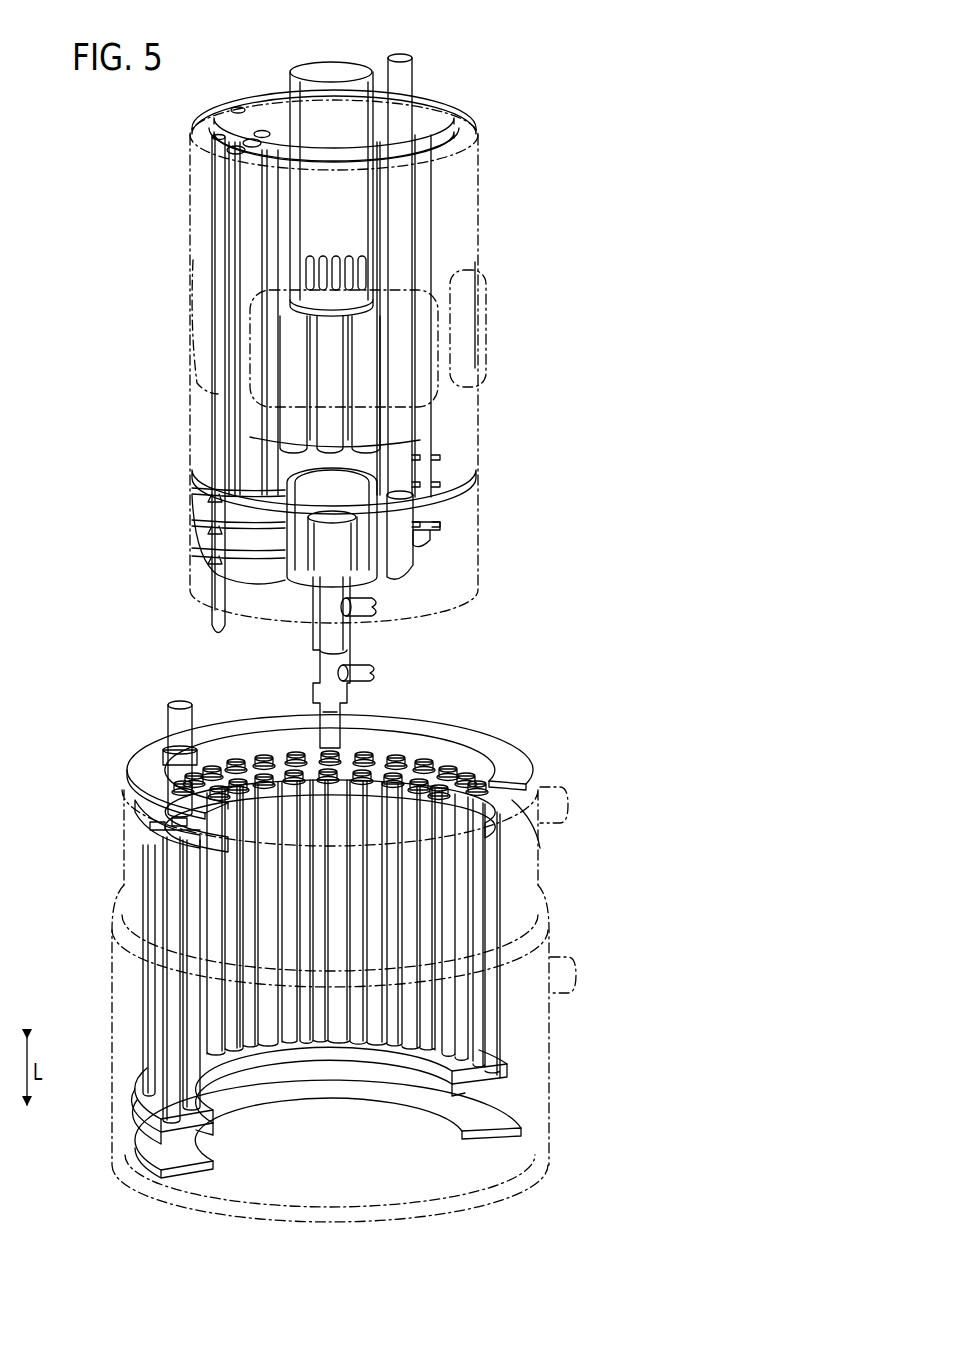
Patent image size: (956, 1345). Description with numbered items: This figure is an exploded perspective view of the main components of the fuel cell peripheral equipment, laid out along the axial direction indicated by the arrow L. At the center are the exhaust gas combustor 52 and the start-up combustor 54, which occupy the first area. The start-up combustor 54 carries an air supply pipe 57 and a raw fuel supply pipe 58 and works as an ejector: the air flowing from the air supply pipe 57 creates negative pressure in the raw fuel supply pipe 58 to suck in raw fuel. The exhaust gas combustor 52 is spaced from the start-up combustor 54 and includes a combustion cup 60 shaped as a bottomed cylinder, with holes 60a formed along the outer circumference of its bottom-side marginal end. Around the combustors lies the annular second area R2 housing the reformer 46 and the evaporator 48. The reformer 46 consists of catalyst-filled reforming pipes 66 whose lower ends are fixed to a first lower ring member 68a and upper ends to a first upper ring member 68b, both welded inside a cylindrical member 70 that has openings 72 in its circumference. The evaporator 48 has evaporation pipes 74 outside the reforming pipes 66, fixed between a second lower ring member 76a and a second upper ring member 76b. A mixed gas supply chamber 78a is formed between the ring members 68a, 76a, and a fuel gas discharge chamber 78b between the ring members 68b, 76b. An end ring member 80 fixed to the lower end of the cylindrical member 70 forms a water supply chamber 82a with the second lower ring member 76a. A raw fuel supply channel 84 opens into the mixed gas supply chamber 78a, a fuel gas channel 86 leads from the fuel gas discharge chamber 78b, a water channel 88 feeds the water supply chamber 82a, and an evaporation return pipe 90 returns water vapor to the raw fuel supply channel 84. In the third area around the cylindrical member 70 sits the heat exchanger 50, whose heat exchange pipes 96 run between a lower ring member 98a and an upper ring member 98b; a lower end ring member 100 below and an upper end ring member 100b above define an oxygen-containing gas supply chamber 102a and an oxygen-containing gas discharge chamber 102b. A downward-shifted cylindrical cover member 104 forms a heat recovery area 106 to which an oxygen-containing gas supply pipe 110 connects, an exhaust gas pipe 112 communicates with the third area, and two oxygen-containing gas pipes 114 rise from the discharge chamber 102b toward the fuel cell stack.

The exhaust gas combustor 52 is at (345, 80).
The start-up combustor 54 is at (306, 633).
The air supply pipe 57 is at (360, 675).
The raw fuel supply pipe 58 is at (364, 613).
The combustion cup 60 is at (310, 80).
The holes 60a is at (340, 268).
The reforming pipes 66 is at (255, 437).
The first lower ring member 68a is at (203, 480).
The first upper ring member 68b is at (420, 140).
The cylindrical member 70 is at (478, 228).
The openings 72 is at (460, 290).
The evaporation pipes 74 is at (425, 423).
The second lower ring member 76a is at (200, 530).
The second upper ring member 76b is at (440, 115).
The mixed gas supply chamber 78a is at (245, 512).
The fuel gas discharge chamber 78b is at (440, 128).
The end ring member 80 is at (242, 573).
The water supply chamber 82a is at (245, 545).
The raw fuel supply channel 84 is at (400, 558).
The fuel gas channel 86 is at (405, 80).
The water channel 88 is at (427, 537).
The evaporation return pipe 90 is at (218, 613).
The reformer 46 is at (258, 250).
The evaporator 48 is at (222, 235).
The second area R2 is at (132, 214).
The heat exchanger 50 is at (505, 886).
The heat exchange pipes 96 is at (175, 889).
The lower ring member 98a is at (507, 1043).
The upper ring member 98b is at (505, 797).
The lower end ring member 100 is at (498, 1118).
The upper end ring member 100b is at (462, 748).
The oxygen-containing gas supply chamber 102a is at (497, 1090).
The oxygen-containing gas discharge chamber 102b is at (502, 771).
The cover member 104 is at (112, 1018).
The heat recovery area 106 is at (125, 852).
The oxygen-containing gas supply pipe 110 is at (572, 973).
The exhaust gas pipe 112 is at (556, 808).
The oxygen-containing gas pipes 114 is at (178, 707).